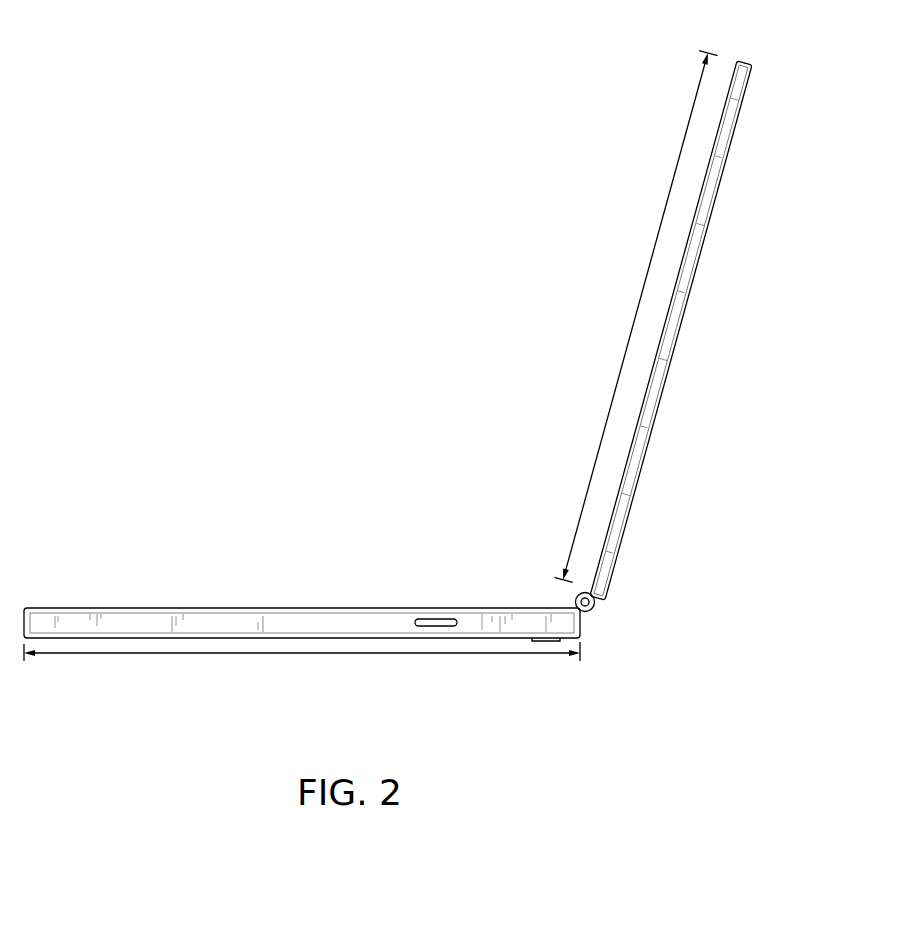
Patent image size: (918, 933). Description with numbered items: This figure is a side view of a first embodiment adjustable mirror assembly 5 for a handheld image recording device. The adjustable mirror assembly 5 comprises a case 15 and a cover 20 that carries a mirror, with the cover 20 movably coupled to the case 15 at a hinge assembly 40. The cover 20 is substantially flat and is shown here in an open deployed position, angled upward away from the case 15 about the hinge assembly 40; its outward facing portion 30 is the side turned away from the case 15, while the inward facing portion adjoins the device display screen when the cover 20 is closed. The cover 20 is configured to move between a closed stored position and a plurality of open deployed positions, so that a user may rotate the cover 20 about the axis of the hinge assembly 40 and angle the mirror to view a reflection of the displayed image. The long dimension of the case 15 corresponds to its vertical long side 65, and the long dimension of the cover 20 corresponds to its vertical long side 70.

The adjustable mirror assembly 5 is at (140, 66).
The case 15 is at (134, 619).
The cover 20 is at (748, 82).
The outward facing portion 30 is at (698, 265).
The hinge assembly 40 is at (593, 611).
The vertical long side of case 65 is at (302, 654).
The vertical long side of cover 70 is at (636, 318).